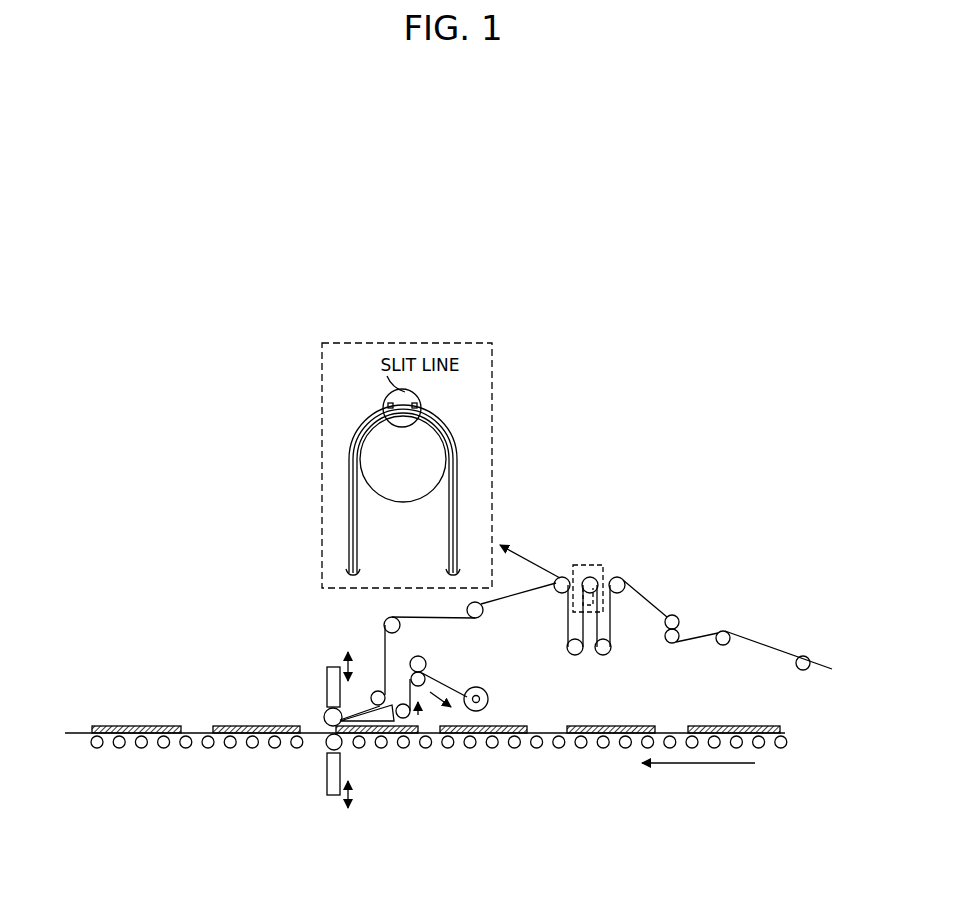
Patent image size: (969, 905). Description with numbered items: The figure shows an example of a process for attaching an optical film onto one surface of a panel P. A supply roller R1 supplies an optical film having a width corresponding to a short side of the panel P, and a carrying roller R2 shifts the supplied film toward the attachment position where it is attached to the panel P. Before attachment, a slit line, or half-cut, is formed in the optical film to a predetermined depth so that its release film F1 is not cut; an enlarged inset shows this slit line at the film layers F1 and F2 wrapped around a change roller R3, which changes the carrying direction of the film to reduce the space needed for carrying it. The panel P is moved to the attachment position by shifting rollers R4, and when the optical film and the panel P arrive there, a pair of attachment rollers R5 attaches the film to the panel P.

The release film F1 is at (445, 548).
The second film F2 is at (438, 411).
The supply roller R1 is at (805, 669).
The carrying roller R2 is at (727, 641).
The change roller R3 is at (398, 488).
The shifting roller R4 is at (582, 746).
The attachment rollers R5 is at (332, 748).
The panel P is at (700, 725).